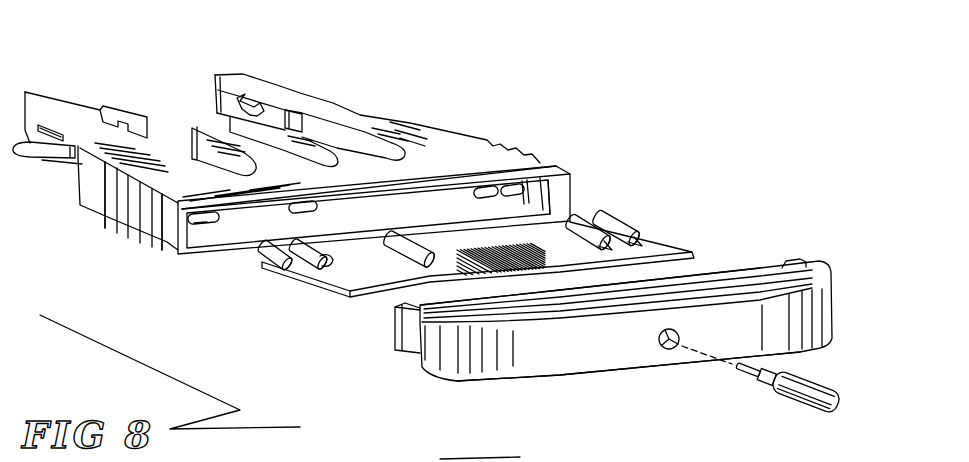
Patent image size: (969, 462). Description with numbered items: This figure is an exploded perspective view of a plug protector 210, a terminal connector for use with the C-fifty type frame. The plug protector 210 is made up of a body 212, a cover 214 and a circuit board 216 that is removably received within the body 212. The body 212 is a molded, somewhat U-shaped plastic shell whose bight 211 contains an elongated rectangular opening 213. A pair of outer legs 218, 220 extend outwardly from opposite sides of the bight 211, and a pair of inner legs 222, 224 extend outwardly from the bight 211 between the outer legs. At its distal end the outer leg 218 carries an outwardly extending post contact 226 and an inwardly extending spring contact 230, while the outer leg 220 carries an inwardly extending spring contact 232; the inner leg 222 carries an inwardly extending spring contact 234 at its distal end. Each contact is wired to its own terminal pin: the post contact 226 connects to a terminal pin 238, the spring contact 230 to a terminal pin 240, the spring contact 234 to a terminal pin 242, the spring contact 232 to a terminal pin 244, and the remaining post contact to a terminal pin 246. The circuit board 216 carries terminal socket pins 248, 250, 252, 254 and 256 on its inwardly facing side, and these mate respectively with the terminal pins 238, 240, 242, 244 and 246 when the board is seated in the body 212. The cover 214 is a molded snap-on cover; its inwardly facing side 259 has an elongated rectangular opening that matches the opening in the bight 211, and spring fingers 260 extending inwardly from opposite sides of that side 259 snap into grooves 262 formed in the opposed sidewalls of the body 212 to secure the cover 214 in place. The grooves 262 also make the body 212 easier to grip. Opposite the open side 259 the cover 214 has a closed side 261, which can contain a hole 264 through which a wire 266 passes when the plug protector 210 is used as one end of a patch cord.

The plug protector 210 is at (428, 387).
The bight 211 is at (459, 164).
The body 212 is at (443, 207).
The elongated rectangular opening 213 is at (490, 190).
The cover 214 is at (844, 265).
The circuit board 216 is at (670, 248).
The outer leg 218 is at (44, 90).
The outer leg 220 is at (217, 77).
The inner leg 222 is at (192, 133).
The inner leg 224 is at (230, 110).
The post contact 226 is at (33, 162).
The spring contact 230 is at (115, 109).
The spring contact 232 is at (242, 98).
The spring contact 234 is at (300, 147).
The terminal pin 238 is at (182, 242).
The terminal pin 240 is at (203, 224).
The terminal pin 242 is at (293, 209).
The terminal pin 244 is at (483, 188).
The terminal pin 246 is at (517, 187).
The terminal socket pin 248 is at (277, 268).
The terminal socket pin 250 is at (307, 271).
The terminal socket pin 252 is at (403, 257).
The terminal socket pin 254 is at (580, 227).
The terminal socket pin 256 is at (617, 220).
The inwardly facing side 259 is at (716, 270).
The spring fingers 260 is at (405, 355).
The closed side 261 is at (543, 372).
The grooves 262 is at (528, 142).
The hole 264 is at (667, 351).
The wire 266 is at (779, 390).